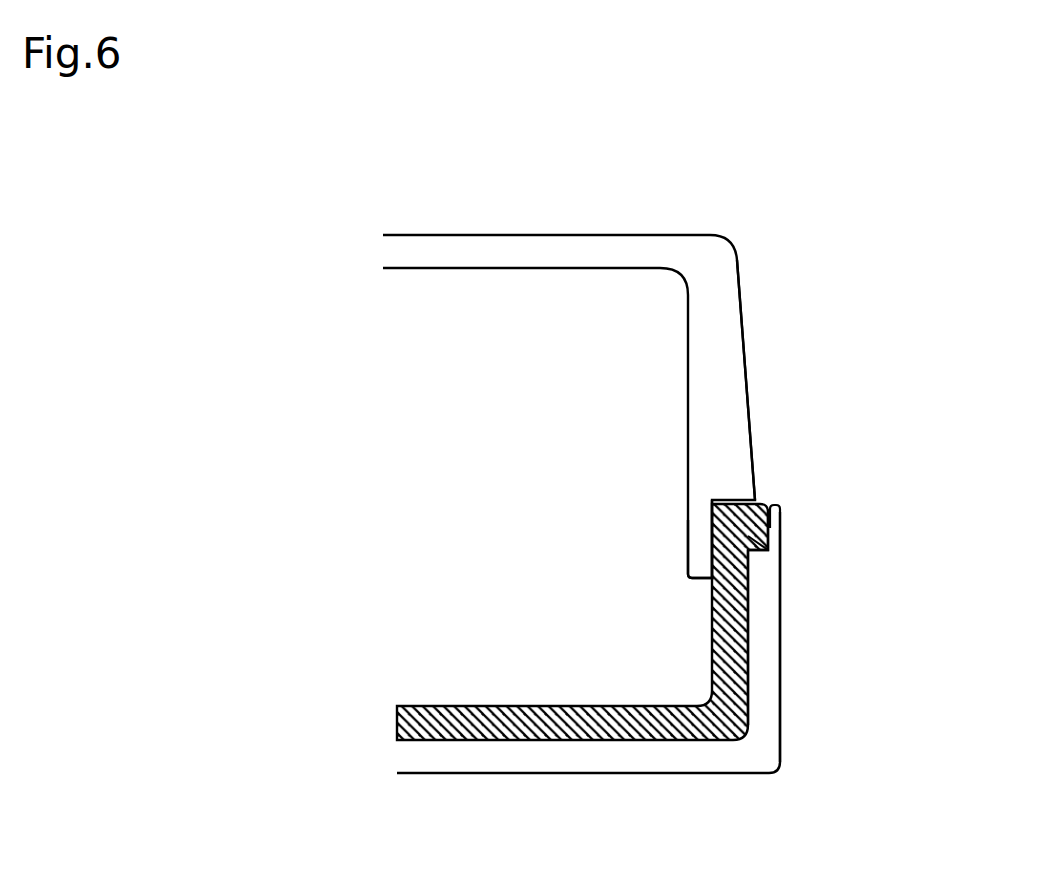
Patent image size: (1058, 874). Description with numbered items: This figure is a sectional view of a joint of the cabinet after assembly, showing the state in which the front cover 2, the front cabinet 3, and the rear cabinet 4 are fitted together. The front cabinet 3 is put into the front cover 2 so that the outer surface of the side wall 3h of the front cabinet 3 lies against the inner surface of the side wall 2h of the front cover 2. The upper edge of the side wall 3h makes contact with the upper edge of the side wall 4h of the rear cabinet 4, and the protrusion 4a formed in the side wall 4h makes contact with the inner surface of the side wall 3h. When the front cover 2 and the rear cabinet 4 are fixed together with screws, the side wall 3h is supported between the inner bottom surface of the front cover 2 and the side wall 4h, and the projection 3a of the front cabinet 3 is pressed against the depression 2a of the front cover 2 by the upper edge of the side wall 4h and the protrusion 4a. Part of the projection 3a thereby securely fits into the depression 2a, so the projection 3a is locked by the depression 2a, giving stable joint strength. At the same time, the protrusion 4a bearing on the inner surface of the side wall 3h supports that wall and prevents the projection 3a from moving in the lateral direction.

The front cover 2 is at (533, 778).
The depression 2a is at (773, 517).
The side wall of the front cover 2h is at (762, 652).
The front cabinet 3 is at (535, 705).
The projection 3a is at (772, 528).
The side wall of the front cabinet 3h is at (748, 600).
The rear cabinet 4 is at (533, 232).
The protrusion 4a is at (698, 548).
The side wall of the rear cabinet 4h is at (740, 408).